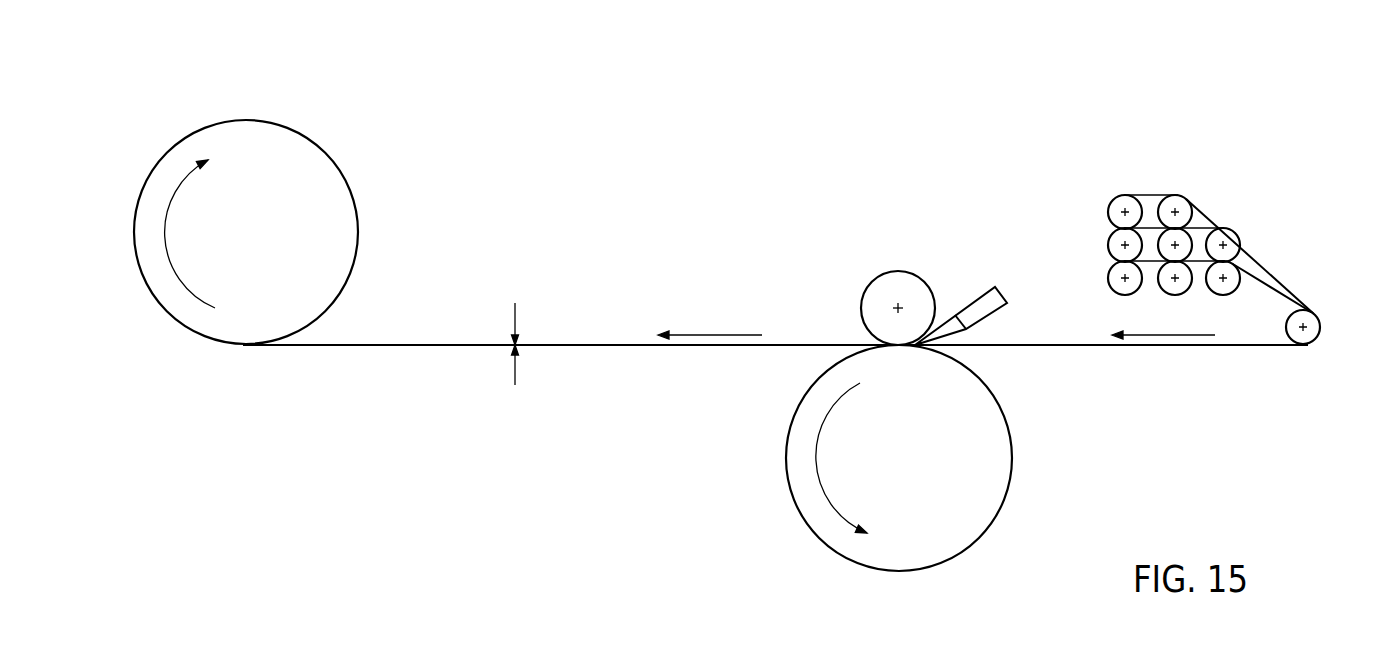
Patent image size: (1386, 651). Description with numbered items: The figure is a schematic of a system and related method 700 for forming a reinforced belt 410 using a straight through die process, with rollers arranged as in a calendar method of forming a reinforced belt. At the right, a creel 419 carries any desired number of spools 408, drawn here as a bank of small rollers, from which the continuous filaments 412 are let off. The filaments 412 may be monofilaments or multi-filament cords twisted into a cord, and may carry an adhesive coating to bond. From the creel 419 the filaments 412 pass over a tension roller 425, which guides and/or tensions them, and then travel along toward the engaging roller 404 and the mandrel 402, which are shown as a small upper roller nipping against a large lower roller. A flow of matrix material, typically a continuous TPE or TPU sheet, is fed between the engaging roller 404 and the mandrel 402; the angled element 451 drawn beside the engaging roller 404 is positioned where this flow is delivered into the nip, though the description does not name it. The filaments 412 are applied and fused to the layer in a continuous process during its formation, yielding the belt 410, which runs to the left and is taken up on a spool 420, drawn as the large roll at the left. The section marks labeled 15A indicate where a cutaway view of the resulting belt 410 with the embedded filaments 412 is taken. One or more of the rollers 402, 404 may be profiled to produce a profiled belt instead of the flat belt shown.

The system and related method 700 is at (1215, 80).
The spool 420 is at (333, 197).
The reinforced belt 410 is at (783, 345).
The engaging roller 404 is at (890, 278).
The mandrel 402 is at (982, 502).
The applicator nozzle 451 is at (990, 308).
The spools 408 is at (1180, 202).
The creel 419 is at (1302, 208).
The tension roller 425 is at (1312, 338).
The filaments 412 is at (1182, 347).
The section line 15A- 15A is at (517, 347).